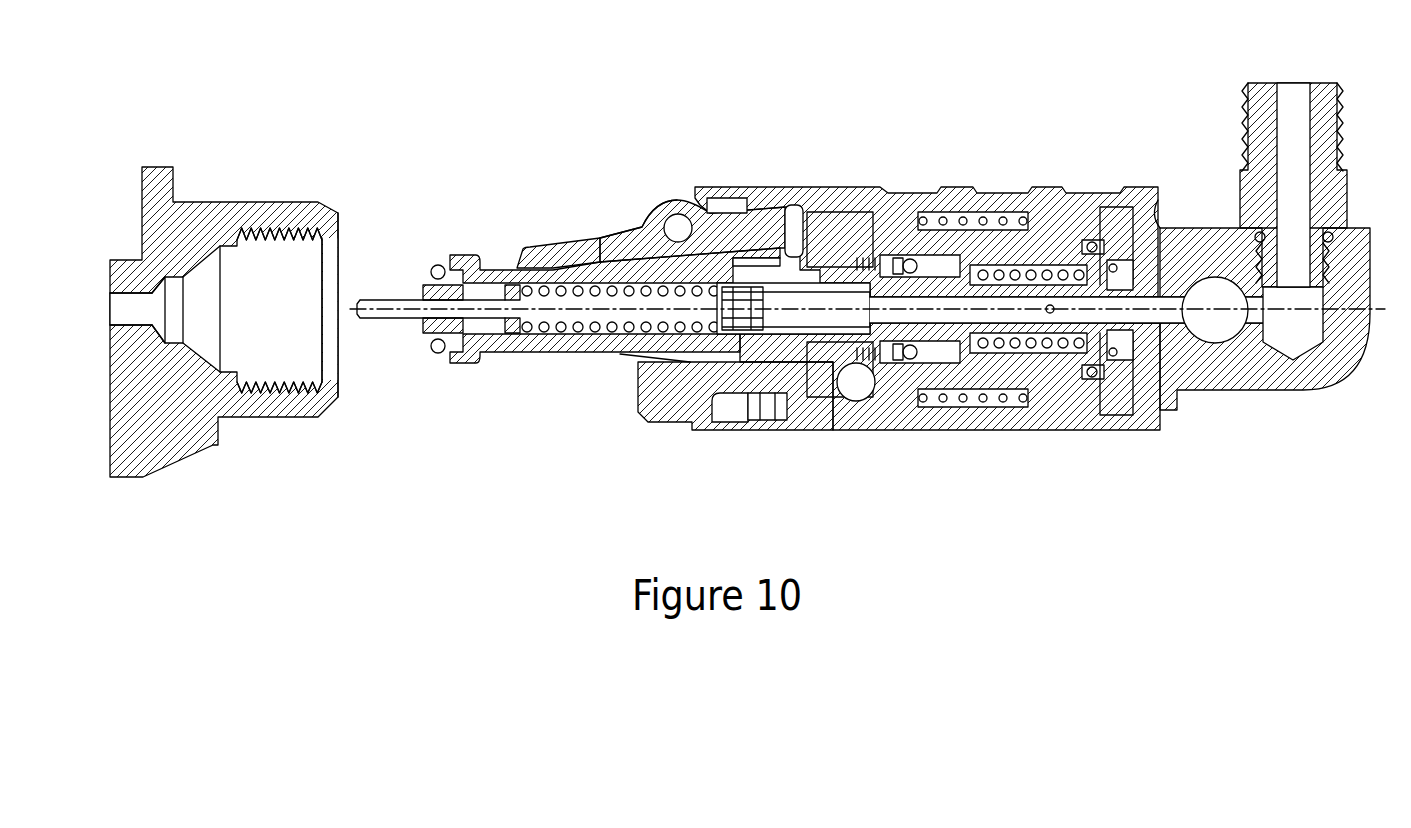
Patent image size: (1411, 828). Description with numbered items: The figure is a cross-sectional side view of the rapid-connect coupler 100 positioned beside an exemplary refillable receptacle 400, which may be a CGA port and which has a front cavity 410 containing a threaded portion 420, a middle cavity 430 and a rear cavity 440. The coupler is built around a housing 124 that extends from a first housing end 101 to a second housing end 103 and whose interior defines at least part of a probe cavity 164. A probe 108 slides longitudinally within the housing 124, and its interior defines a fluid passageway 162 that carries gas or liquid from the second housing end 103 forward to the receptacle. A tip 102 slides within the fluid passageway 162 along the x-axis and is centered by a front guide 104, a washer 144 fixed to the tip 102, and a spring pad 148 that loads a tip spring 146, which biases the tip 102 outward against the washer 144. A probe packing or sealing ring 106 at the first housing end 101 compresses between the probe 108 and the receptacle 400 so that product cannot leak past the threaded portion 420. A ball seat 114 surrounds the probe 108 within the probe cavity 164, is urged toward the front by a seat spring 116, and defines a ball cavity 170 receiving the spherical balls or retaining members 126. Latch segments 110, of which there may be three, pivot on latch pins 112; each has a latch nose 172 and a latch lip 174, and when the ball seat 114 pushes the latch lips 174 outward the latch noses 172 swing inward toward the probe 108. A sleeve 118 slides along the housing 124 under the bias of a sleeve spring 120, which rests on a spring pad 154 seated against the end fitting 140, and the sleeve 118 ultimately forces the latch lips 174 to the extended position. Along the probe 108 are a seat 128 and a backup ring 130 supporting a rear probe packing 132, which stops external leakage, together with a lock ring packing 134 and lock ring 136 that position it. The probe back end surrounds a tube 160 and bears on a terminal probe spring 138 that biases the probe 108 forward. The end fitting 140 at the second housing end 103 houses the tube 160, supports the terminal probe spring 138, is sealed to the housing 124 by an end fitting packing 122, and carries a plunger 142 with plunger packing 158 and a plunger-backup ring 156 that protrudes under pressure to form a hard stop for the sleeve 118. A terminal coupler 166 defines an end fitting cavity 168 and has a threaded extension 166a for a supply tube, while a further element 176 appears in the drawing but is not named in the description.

The rapid-connect coupler 100 is at (863, 266).
The first housing end 101 is at (802, 304).
The tip 102 is at (372, 300).
The second housing end 103 is at (1241, 256).
The front guide 104 is at (420, 290).
The probe packing or sealing ring 106 is at (436, 265).
The probe 108 is at (465, 255).
The latch segments 110 is at (624, 232).
The latch pins 112 is at (678, 214).
The ball seat 114 is at (842, 258).
The seat spring 116 is at (870, 257).
The sleeve 118 is at (985, 192).
The sleeve spring 120 is at (1015, 212).
The end fitting packing 122 is at (1092, 242).
The housing 124 is at (642, 212).
The spherical balls or retaining members 126 is at (845, 397).
The seat 128 is at (885, 358).
The backup ring 130 is at (887, 364).
The rear probe packing 132 is at (912, 360).
The lock ring packing 134 is at (935, 358).
The lock ring 136 is at (976, 354).
The terminal probe spring 138 is at (1060, 380).
The end fitting 140 is at (1180, 393).
The plunger 142 is at (1135, 237).
The washer 144 is at (510, 340).
The tip spring 146 is at (590, 333).
The spring pad 148 is at (720, 330).
The spring pad 154 is at (1052, 190).
The plunger-backup ring 156 is at (1138, 262).
The plunger packing 158 is at (1150, 275).
The tube 160 is at (1124, 322).
The fluid passageway 162 is at (486, 326).
The probe cavity 164 is at (635, 364).
The terminal coupler 166 is at (1340, 170).
The threaded extension 166a is at (1250, 100).
The end fitting cavity 168 is at (1292, 115).
The ball cavity 170 is at (851, 398).
The latch nose 172 is at (530, 247).
The latch lip 174 is at (792, 208).
The leaf spring 176 is at (757, 262).
The refillable receptacle 400 is at (222, 298).
The front cavity 410 is at (340, 376).
The threaded portion 420 is at (290, 240).
The middle cavity 430 is at (192, 315).
The rear cavity 440 is at (108, 308).